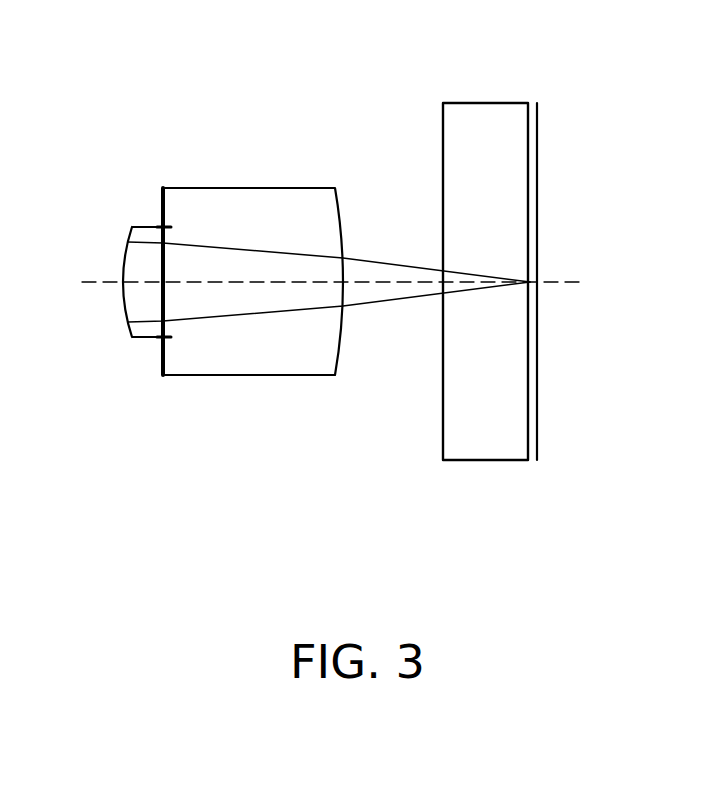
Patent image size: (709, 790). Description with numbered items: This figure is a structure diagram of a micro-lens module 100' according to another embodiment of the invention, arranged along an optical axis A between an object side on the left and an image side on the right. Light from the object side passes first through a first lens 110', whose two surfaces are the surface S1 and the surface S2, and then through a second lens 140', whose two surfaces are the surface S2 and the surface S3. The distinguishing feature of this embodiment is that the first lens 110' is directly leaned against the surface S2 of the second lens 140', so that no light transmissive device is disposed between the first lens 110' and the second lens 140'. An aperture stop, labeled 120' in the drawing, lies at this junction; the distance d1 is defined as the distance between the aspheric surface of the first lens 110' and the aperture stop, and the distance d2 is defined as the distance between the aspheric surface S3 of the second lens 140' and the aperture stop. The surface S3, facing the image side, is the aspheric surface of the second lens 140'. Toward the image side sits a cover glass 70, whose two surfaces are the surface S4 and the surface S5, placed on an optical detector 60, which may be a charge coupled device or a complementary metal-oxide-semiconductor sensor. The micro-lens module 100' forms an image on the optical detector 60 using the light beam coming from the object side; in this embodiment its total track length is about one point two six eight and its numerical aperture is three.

The micro-lens module 100' is at (324, 308).
The first lens 110' is at (133, 317).
The aperture stop / diaphragm 120' is at (180, 316).
The second lens 140' is at (254, 307).
The cover glass 70 is at (487, 442).
The optical detector 60 is at (537, 460).
The surface S1 is at (128, 232).
The surface S2 is at (162, 203).
The surface S3 is at (338, 200).
The surface S4 is at (441, 118).
The surface S5 is at (538, 118).
The distance d1 is at (162, 110).
The distance d2 is at (162, 103).
The optical axis A is at (363, 283).